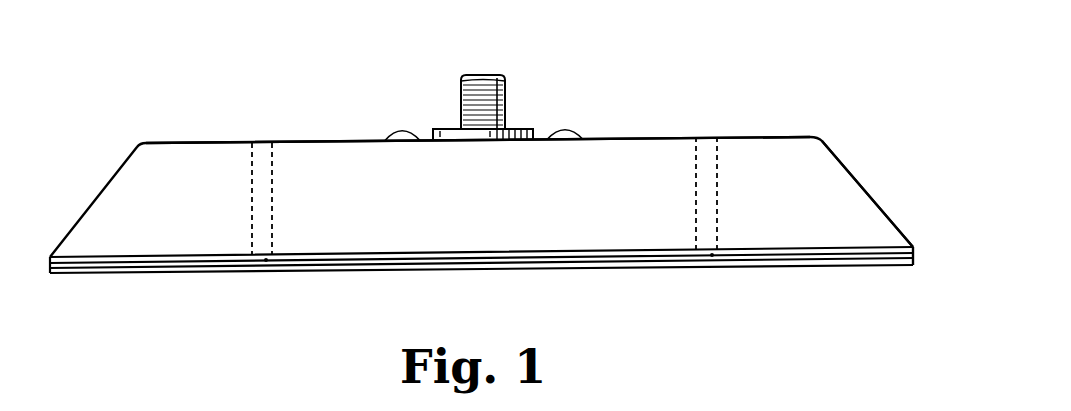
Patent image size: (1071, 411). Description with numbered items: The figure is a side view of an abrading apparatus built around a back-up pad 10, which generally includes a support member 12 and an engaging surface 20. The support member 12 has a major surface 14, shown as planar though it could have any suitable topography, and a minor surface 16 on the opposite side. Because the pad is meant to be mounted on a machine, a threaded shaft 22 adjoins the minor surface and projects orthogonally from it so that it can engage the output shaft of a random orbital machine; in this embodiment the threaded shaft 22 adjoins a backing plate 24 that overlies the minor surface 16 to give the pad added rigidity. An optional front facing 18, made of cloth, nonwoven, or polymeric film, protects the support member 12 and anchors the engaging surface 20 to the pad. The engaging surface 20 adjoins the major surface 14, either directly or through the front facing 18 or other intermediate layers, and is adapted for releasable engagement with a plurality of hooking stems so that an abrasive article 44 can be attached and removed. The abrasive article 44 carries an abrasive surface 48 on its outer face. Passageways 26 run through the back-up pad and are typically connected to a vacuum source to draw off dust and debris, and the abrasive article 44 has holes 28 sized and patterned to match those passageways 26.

The back-up pad 10 is at (648, 97).
The support member 12 is at (786, 158).
The major surface 14 is at (85, 257).
The minor surface 16 is at (600, 138).
The front facing 18 is at (853, 247).
The engaging surface 20 is at (897, 265).
The threaded shaft 22 is at (462, 103).
The backing plate 24 is at (452, 132).
The passageways 26 is at (272, 183).
The holes 28 is at (262, 262).
The abrasive article 44 is at (430, 270).
The abrasive surface 48 is at (570, 266).